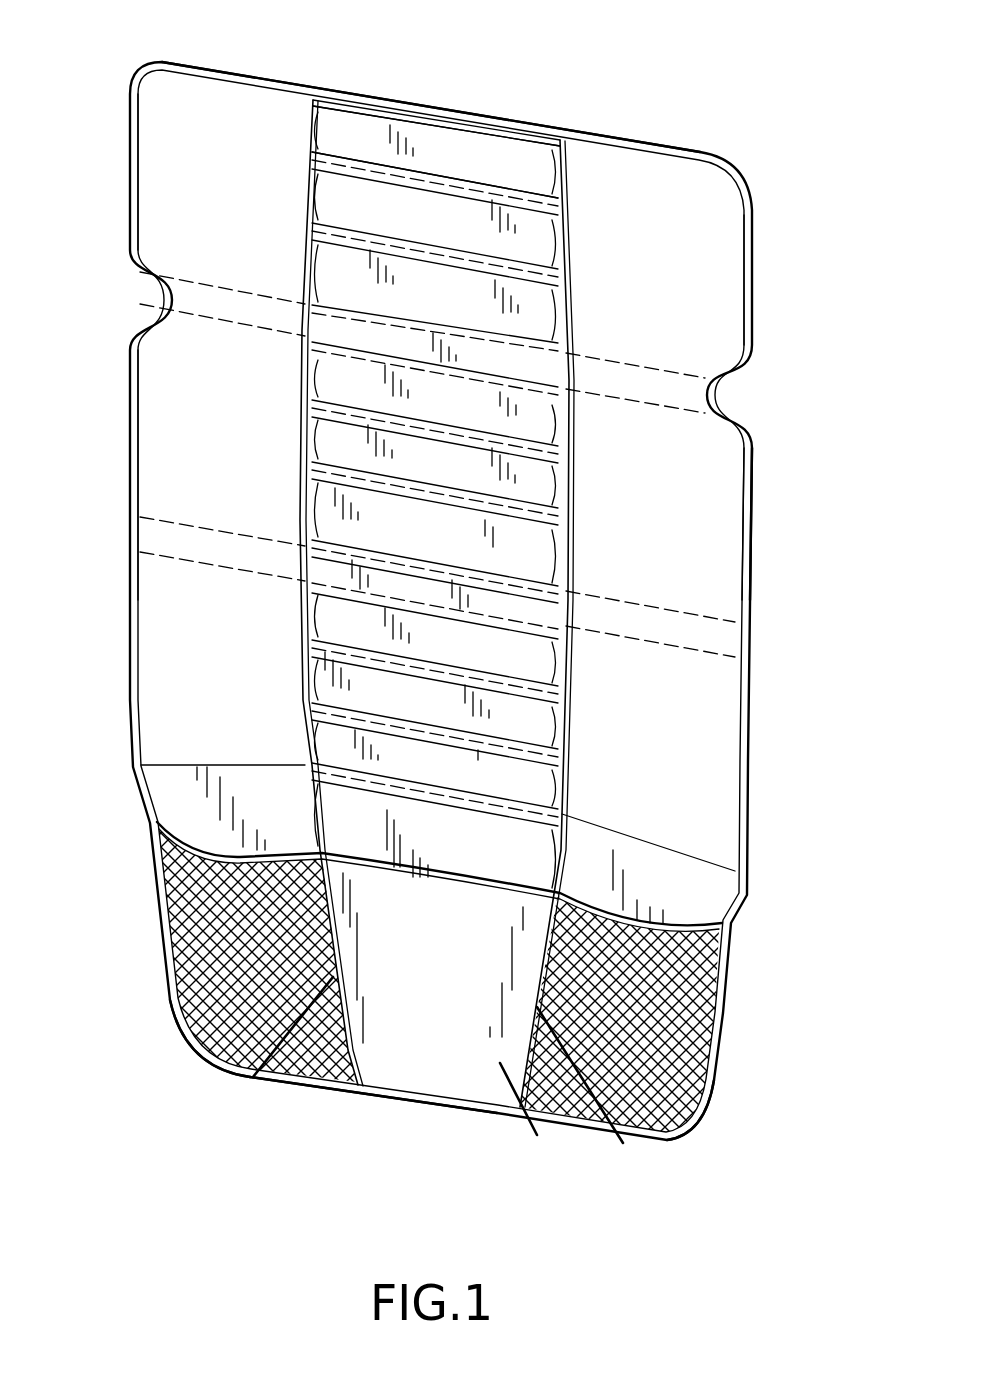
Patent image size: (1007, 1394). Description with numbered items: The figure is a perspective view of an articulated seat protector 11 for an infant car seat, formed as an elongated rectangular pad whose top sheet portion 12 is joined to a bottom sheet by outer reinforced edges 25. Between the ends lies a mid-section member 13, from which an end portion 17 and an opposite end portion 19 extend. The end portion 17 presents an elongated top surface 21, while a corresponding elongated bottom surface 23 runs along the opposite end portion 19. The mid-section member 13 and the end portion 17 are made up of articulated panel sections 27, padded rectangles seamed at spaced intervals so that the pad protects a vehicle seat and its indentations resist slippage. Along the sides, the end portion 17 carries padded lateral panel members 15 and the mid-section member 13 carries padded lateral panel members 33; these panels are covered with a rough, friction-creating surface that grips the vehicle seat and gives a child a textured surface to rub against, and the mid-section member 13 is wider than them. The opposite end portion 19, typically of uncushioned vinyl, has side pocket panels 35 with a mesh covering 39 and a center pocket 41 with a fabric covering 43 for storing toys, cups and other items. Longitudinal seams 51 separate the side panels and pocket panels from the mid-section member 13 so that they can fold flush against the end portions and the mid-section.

The articulated seat protector 11 is at (738, 168).
The top sheet portion 12 is at (720, 315).
The mid-section member 13 is at (533, 547).
The padded lateral panel member 15 is at (727, 233).
The end portion 17 is at (467, 147).
The opposite end portion 19 is at (455, 1070).
The elongated top surface 21 is at (267, 78).
The elongated bottom surface 23 is at (353, 1097).
The outer reinforced edges 25 is at (752, 575).
The articulated panel sections 27 is at (360, 137).
The padded lateral panel member 33 is at (717, 468).
The side pocket panel 35 is at (707, 1087).
The mesh covering 39 is at (687, 993).
The center pocket 41 is at (418, 1040).
The fabric covering 43 is at (537, 1135).
The longitudinal seam 51 is at (623, 1143).